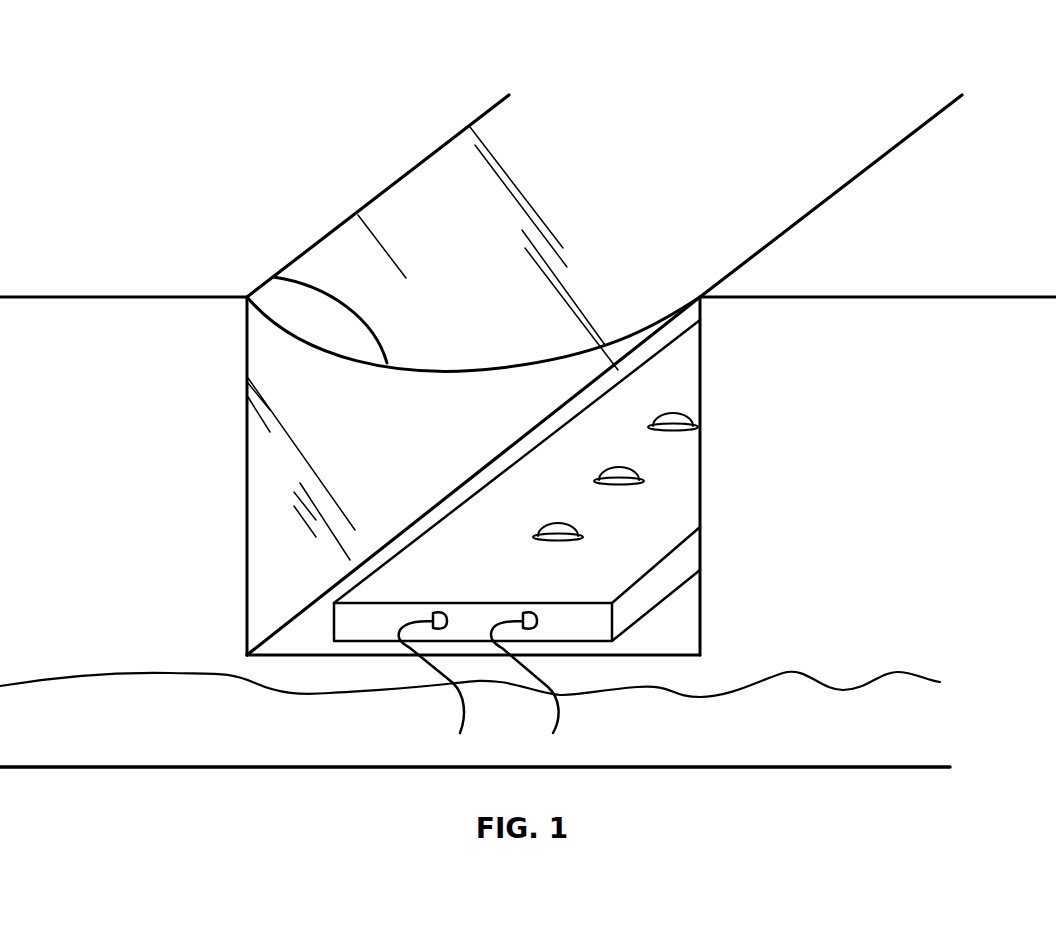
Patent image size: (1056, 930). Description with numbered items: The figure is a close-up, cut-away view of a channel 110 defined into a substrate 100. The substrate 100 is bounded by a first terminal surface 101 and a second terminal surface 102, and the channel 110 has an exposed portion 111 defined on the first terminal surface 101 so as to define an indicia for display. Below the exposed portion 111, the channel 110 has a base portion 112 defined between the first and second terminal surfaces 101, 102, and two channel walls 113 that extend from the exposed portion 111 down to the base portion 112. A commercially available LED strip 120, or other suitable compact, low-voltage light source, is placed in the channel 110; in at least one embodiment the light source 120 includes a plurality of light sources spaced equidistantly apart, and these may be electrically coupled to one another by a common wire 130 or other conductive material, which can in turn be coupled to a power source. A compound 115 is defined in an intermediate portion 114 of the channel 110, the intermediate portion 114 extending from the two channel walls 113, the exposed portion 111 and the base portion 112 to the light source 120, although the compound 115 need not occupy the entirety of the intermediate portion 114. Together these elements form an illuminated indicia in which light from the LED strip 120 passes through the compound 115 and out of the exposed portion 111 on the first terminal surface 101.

The substrate 100 is at (603, 512).
The first terminal surface 101 is at (958, 212).
The second terminal surface 102 is at (912, 767).
The channel 110 is at (278, 542).
The exposed portion 111 is at (712, 175).
The base portion 112 is at (330, 656).
The channel walls 113 is at (247, 512).
The intermediate portion 114 is at (377, 457).
The compound 115 is at (273, 277).
The LED strip 120 is at (585, 543).
The common wire 130 is at (913, 670).